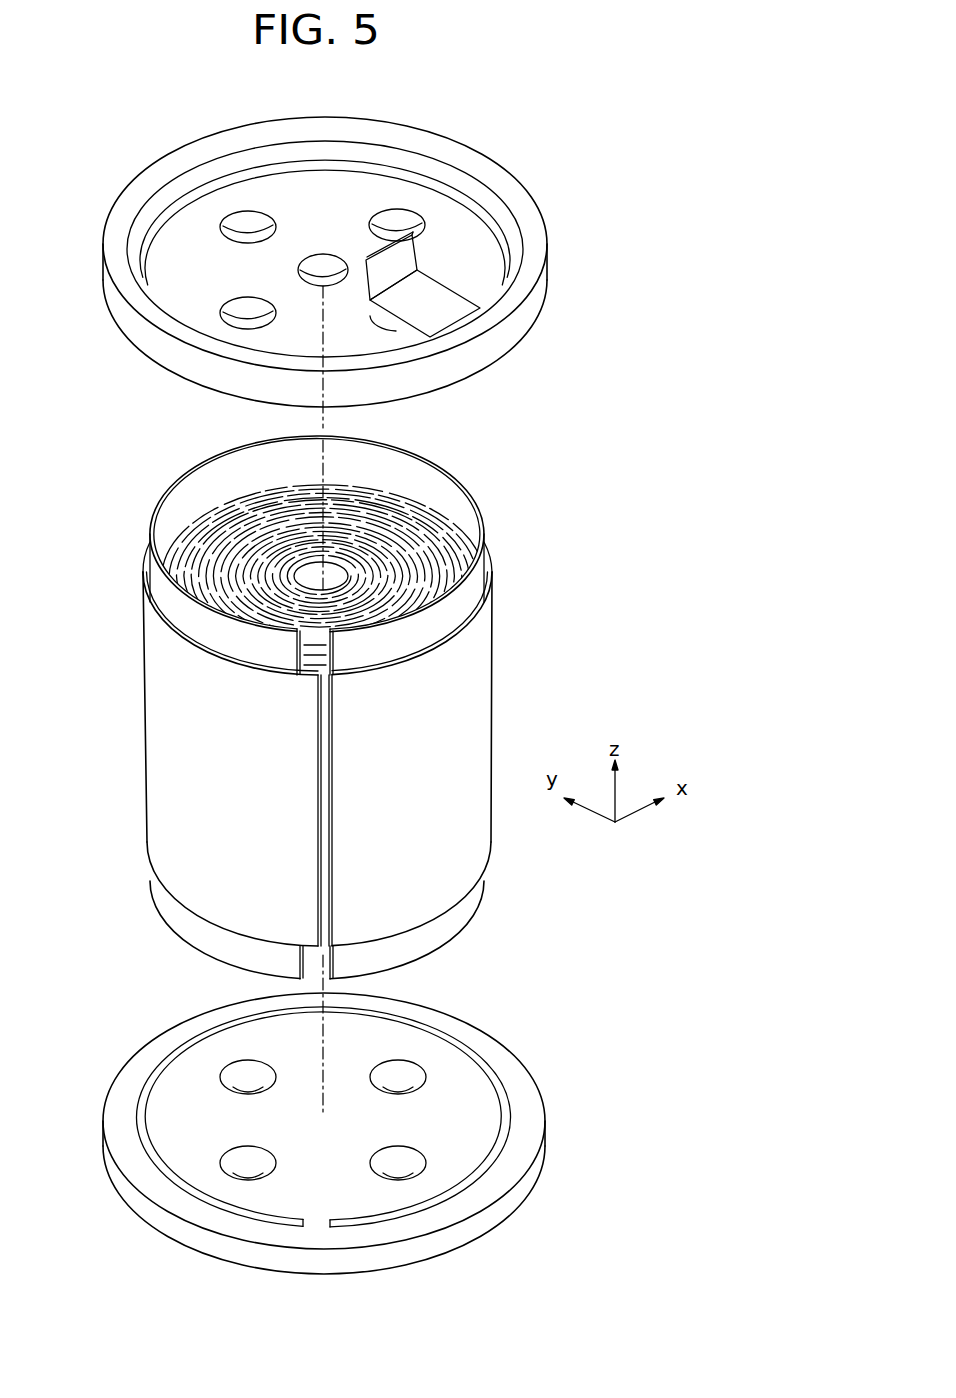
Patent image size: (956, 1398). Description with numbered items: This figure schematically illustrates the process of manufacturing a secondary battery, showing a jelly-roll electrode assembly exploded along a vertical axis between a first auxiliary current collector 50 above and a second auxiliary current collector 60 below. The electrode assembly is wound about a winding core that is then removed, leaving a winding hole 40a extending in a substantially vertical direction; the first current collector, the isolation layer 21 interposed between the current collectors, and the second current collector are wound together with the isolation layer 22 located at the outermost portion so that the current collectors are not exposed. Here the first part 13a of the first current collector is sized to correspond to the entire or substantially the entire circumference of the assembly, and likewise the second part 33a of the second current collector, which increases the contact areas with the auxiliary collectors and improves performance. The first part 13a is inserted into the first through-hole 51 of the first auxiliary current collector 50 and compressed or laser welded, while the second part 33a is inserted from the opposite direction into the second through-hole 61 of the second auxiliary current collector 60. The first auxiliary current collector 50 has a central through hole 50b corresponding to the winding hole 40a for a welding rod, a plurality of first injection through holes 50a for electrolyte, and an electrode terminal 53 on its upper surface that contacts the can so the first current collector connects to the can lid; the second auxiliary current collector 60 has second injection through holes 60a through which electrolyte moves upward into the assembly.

The first auxiliary current collector 50 is at (384, 240).
The first injection through holes 50a is at (374, 317).
The central through hole 50b is at (299, 266).
The first through-hole 51 is at (442, 186).
The electrode terminal 53 is at (405, 268).
The winding hole 40a is at (343, 560).
The first part 13a is at (232, 642).
The isolation layer 22 is at (286, 757).
The second part 33a is at (230, 947).
The isolation layer 21 is at (331, 910).
The second auxiliary current collector 60 is at (345, 1126).
The second through-hole 61 is at (132, 1131).
The second injection through holes 60a is at (277, 1067).